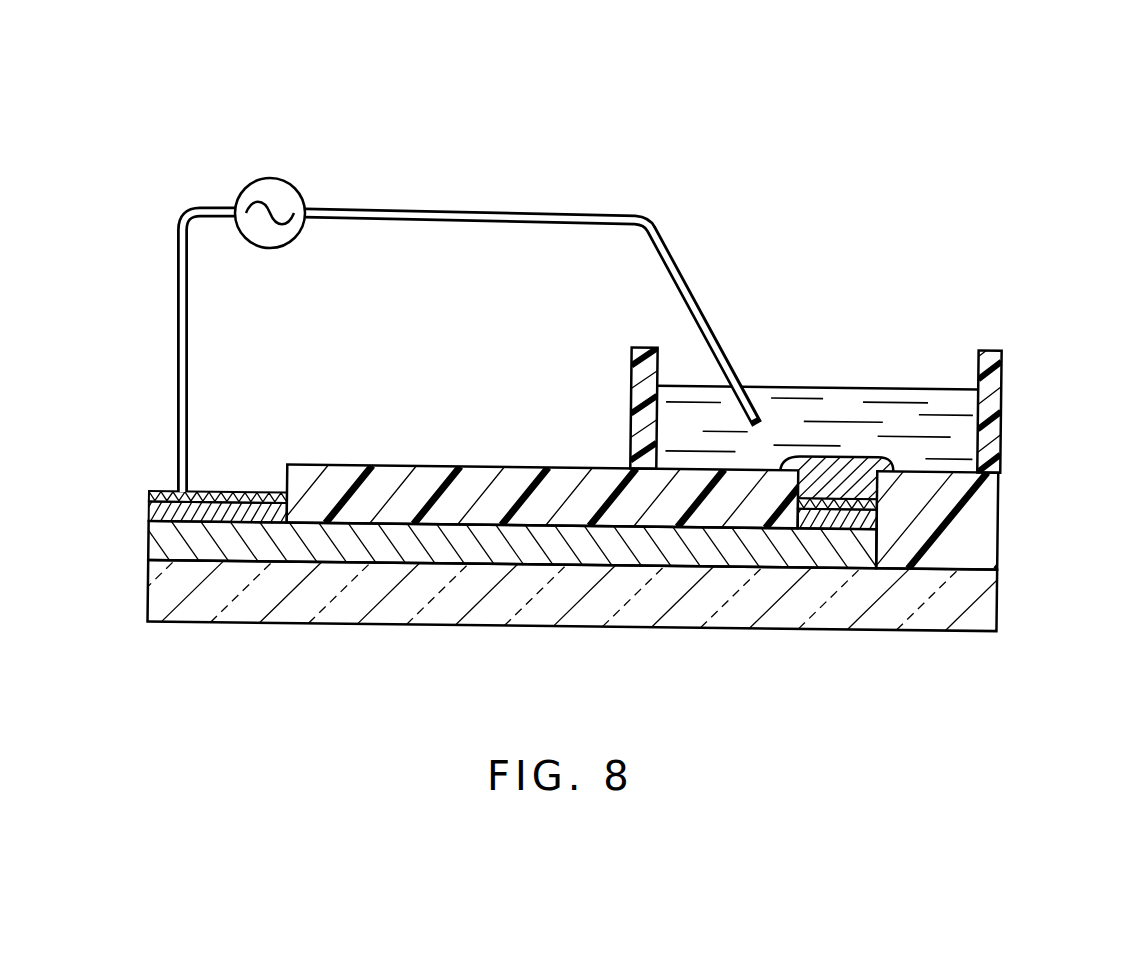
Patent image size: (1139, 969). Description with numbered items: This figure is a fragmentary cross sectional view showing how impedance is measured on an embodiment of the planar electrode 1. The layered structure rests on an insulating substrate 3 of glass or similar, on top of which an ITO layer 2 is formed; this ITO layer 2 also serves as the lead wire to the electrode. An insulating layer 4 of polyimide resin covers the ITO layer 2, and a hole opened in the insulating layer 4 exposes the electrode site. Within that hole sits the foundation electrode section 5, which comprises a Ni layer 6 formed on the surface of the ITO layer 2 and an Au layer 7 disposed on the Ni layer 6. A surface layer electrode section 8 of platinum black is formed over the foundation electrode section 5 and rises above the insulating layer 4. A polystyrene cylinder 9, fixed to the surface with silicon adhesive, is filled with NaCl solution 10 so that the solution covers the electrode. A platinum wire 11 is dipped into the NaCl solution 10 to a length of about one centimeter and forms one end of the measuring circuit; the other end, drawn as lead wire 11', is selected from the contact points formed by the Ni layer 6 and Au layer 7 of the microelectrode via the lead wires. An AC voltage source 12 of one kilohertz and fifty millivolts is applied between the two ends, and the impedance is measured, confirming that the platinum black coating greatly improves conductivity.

The planar electrode 1 is at (160, 177).
The ITO layer 2 is at (167, 540).
The insulating substrate 3 is at (172, 592).
The insulating layer 4 is at (560, 485).
The foundation electrode section 5 is at (882, 292).
The Ni layer 6 is at (160, 510).
The Au layer 7 is at (157, 493).
The surface layer electrode section 8 is at (877, 467).
The polystyrene cylinder 9 is at (1000, 397).
The NaCl solution 10 is at (963, 441).
The platinum wire 11 is at (531, 274).
The lead wire 11' is at (127, 352).
The AC voltage source 12 is at (278, 178).